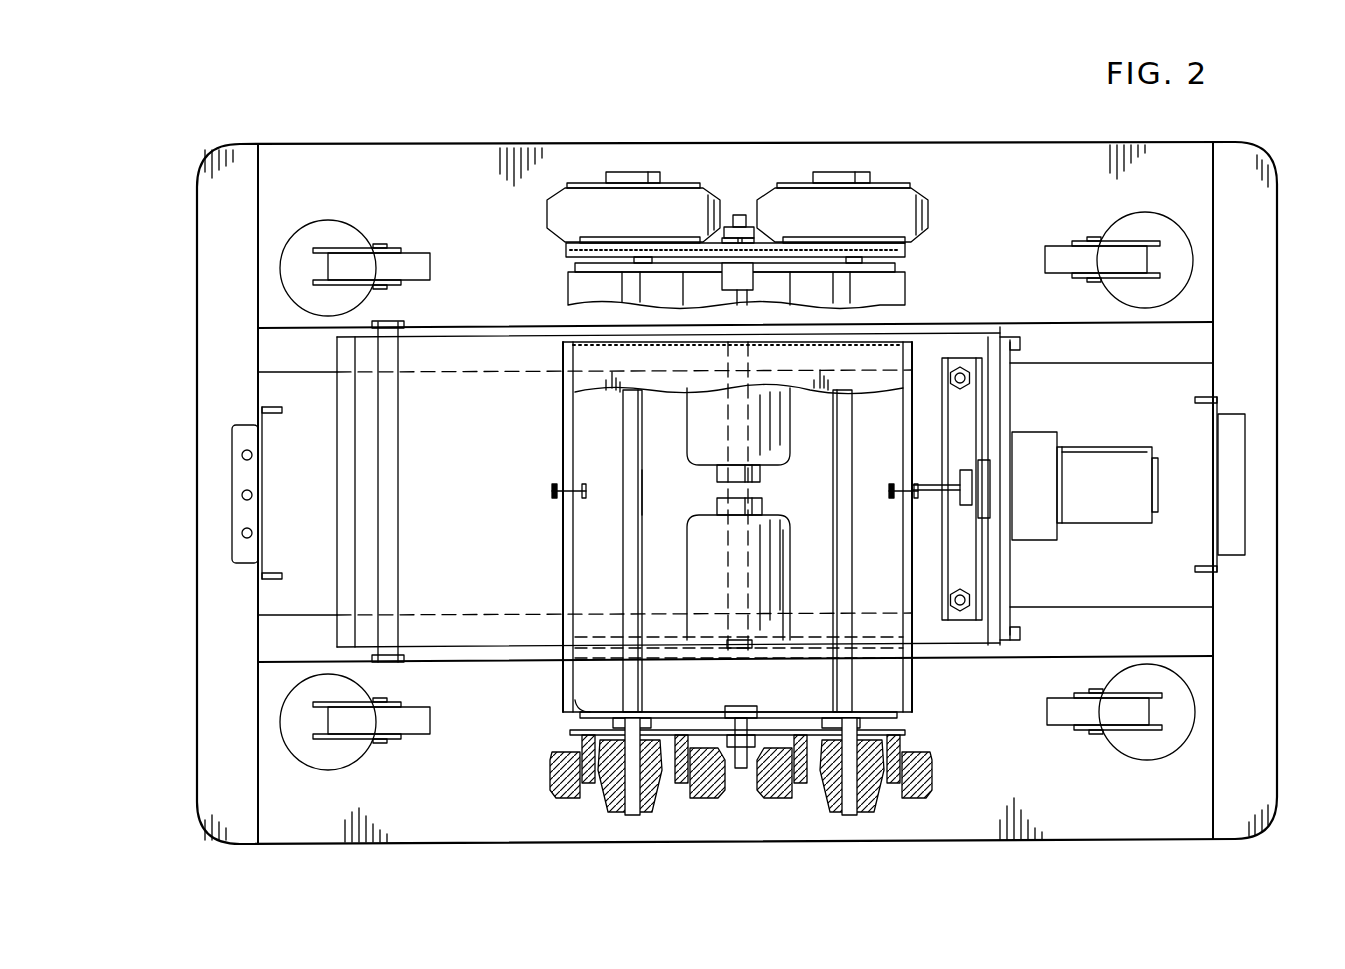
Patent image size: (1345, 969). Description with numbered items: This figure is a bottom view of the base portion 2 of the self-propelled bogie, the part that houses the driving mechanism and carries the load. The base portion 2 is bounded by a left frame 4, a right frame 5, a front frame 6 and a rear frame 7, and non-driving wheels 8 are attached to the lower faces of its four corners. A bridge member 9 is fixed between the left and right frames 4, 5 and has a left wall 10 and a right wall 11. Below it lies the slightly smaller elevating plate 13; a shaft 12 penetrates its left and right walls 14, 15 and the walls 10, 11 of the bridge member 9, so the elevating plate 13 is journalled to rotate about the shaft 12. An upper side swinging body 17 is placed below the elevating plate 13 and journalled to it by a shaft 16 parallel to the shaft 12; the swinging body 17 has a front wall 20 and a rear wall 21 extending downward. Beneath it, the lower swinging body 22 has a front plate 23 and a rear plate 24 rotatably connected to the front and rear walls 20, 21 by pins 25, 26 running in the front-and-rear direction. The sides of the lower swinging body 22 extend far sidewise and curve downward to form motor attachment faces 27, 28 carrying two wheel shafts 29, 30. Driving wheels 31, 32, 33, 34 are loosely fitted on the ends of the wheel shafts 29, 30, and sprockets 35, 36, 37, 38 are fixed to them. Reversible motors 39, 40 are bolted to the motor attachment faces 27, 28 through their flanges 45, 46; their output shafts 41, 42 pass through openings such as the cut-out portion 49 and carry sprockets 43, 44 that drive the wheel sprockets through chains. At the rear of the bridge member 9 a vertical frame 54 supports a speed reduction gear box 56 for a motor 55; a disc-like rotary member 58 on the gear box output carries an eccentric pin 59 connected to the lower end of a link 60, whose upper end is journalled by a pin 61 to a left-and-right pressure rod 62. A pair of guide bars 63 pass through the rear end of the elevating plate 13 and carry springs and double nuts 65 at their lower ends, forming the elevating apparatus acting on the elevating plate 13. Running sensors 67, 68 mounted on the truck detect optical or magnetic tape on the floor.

The base portion 2 is at (932, 140).
The left frame 4 is at (458, 160).
The right frame 5 is at (505, 822).
The front frame 6 is at (200, 262).
The rear frame 7 is at (1262, 288).
The non-driving wheels 8 is at (418, 250).
The bridge member 9 is at (340, 400).
The left wall 10 is at (458, 328).
The right wall 11 is at (476, 655).
The shaft 12 is at (398, 432).
The elevating plate 13 is at (370, 492).
The left wall 14 is at (485, 345).
The right wall 15 is at (440, 640).
The shaft 16 is at (728, 563).
The upper side swinging body 17 is at (562, 562).
The front wall 20 is at (575, 428).
The rear wall 21 is at (915, 380).
The lower swinging body 22 is at (580, 680).
The front plate 23 is at (578, 432).
The rear plate 24 is at (893, 432).
The pin 25 is at (552, 491).
The pin 26 is at (888, 487).
The motor attachment face 27 is at (570, 290).
The motor attachment face 28 is at (575, 700).
The wheel shaft 29 is at (645, 493).
The wheel shaft 30 is at (830, 488).
The driving wheel 31 is at (594, 203).
The driving wheel 32 is at (563, 797).
The driving wheel 33 is at (868, 200).
The driving wheel 34 is at (922, 797).
The sprocket 35 is at (566, 250).
The sprocket 36 is at (577, 733).
The sprocket 37 is at (905, 248).
The sprocket 38 is at (905, 734).
The reversible motor 39 is at (690, 428).
The reversible motor 40 is at (790, 572).
The output shaft 41 is at (738, 230).
The output shaft 42 is at (745, 770).
The sprocket 43 is at (763, 250).
The sprocket 44 is at (737, 770).
The flange 45 is at (895, 278).
The flange 46 is at (640, 718).
The cut-out portion 49 is at (740, 706).
The vertical frame 54 is at (1012, 562).
The motor 55 is at (1137, 447).
The speed reduction gear box 56 is at (1060, 487).
The rotary member 58 is at (1030, 440).
The pin 59 is at (968, 540).
The link 60 is at (985, 465).
The pin 61 is at (912, 505).
The pressure rod 62 is at (940, 547).
The guide bar 63 is at (975, 395).
The double nuts 65 is at (975, 600).
The running sensor 67 is at (232, 492).
The running sensor 68 is at (1246, 468).